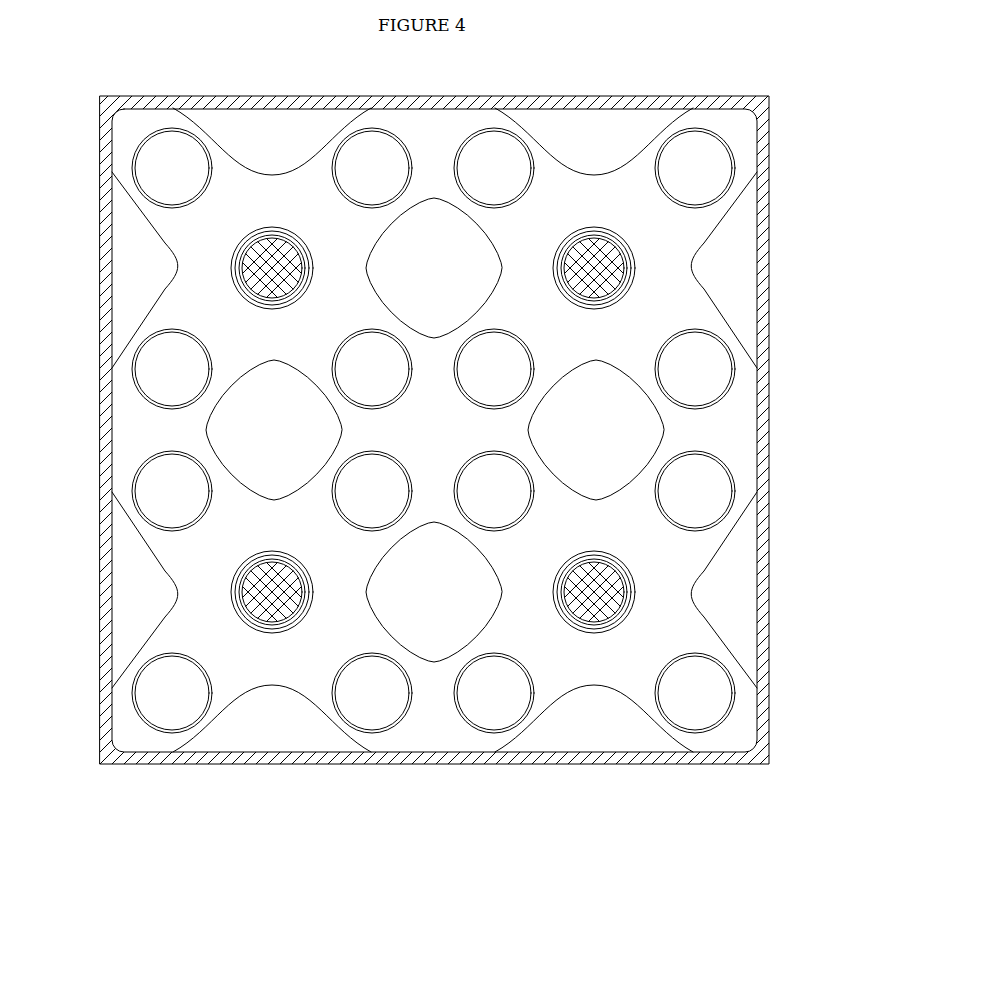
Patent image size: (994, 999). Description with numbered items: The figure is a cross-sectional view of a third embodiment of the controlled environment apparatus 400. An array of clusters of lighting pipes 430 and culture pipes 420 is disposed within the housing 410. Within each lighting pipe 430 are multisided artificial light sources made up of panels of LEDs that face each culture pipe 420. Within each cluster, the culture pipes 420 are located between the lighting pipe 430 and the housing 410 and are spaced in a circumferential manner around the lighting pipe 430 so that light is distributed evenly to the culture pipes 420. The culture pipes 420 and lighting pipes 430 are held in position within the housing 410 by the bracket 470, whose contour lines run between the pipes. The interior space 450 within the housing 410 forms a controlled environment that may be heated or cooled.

The controlled environment apparatus 400 is at (433, 506).
The housing 410 is at (163, 765).
The culture pipe 420 is at (200, 138).
The lighting pipe 430 is at (233, 267).
The interior space 450 is at (585, 133).
The bracket 470 is at (178, 227).